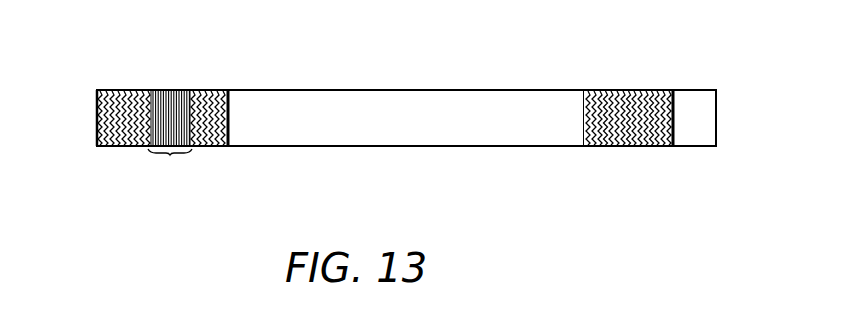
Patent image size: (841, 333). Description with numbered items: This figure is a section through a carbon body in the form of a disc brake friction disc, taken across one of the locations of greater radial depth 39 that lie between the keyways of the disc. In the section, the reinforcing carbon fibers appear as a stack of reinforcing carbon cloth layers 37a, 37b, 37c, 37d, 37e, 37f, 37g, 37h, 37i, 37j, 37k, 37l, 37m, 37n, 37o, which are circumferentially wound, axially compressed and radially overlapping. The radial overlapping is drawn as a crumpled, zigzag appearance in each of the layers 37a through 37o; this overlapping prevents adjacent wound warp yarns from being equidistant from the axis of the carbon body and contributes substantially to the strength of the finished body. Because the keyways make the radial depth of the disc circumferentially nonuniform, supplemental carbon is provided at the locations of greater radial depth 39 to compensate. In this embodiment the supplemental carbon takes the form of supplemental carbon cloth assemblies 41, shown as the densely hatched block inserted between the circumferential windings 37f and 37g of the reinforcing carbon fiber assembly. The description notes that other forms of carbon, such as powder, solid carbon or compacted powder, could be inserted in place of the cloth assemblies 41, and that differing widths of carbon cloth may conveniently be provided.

The locations of greater radial depth 39 is at (406, 75).
The supplemental carbon cloth assemblies 41 is at (170, 156).
The reinforcing carbon cloth layer 37a is at (225, 90).
The reinforcing carbon cloth layer 37b is at (222, 144).
The reinforcing carbon cloth layer 37c is at (213, 90).
The reinforcing carbon cloth layer 37d is at (205, 144).
The reinforcing carbon cloth layer 37e is at (201, 90).
The reinforcing carbon cloth layer 37f is at (192, 144).
The reinforcing carbon cloth layer 37g is at (150, 90).
The reinforcing carbon cloth layer 37h is at (138, 144).
The reinforcing carbon cloth layer 37i is at (137, 90).
The reinforcing carbon cloth layer 37j is at (125, 144).
The reinforcing carbon cloth layer 37k is at (118, 92).
The reinforcing carbon cloth layer 37l is at (112, 144).
The reinforcing carbon cloth layer 37m is at (108, 93).
The reinforcing carbon cloth layer 37n is at (97, 143).
The reinforcing carbon cloth layer 37o is at (98, 92).